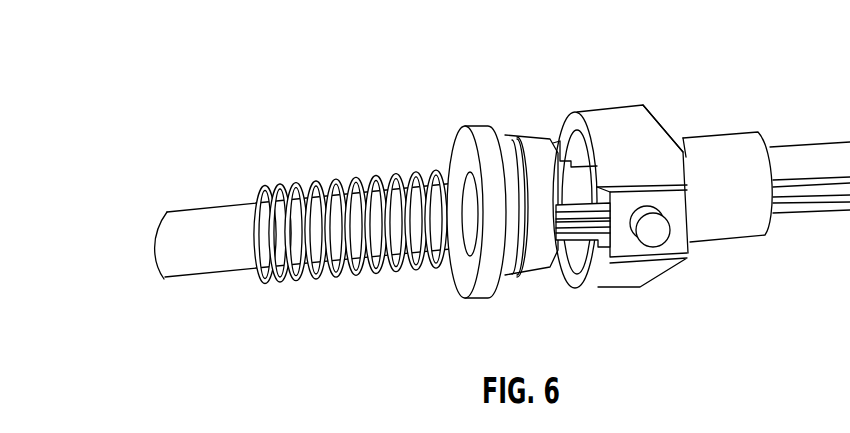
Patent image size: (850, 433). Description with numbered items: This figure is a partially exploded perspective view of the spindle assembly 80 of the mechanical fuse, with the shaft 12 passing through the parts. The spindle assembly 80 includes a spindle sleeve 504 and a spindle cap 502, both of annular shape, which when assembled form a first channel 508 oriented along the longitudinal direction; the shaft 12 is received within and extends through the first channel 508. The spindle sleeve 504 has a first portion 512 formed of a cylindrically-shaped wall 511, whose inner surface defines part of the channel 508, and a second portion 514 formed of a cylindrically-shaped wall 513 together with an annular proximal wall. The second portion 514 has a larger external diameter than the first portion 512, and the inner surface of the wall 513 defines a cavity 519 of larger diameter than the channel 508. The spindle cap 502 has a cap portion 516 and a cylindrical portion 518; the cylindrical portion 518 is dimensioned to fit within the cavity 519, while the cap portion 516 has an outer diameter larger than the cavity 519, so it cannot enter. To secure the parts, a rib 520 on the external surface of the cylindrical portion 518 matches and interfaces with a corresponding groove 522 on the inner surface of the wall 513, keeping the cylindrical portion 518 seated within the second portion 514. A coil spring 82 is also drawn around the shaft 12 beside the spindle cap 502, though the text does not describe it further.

The shaft 12 is at (194, 207).
The spring 82 is at (273, 187).
The spindle assembly 80 is at (696, 183).
The spindle cap 502 is at (467, 201).
The spindle sleeve 504 is at (631, 198).
The first channel 508 is at (463, 252).
The cylindrically-shaped wall 511 is at (750, 147).
The first portion 512 is at (713, 133).
The cylindrically-shaped wall 513 is at (650, 122).
The second portion 514 is at (608, 110).
The cap portion 516 is at (452, 198).
The cylindrical portion 518 is at (497, 173).
The cavity 519 is at (583, 258).
The rib 520 is at (532, 272).
The groove 522 is at (598, 238).